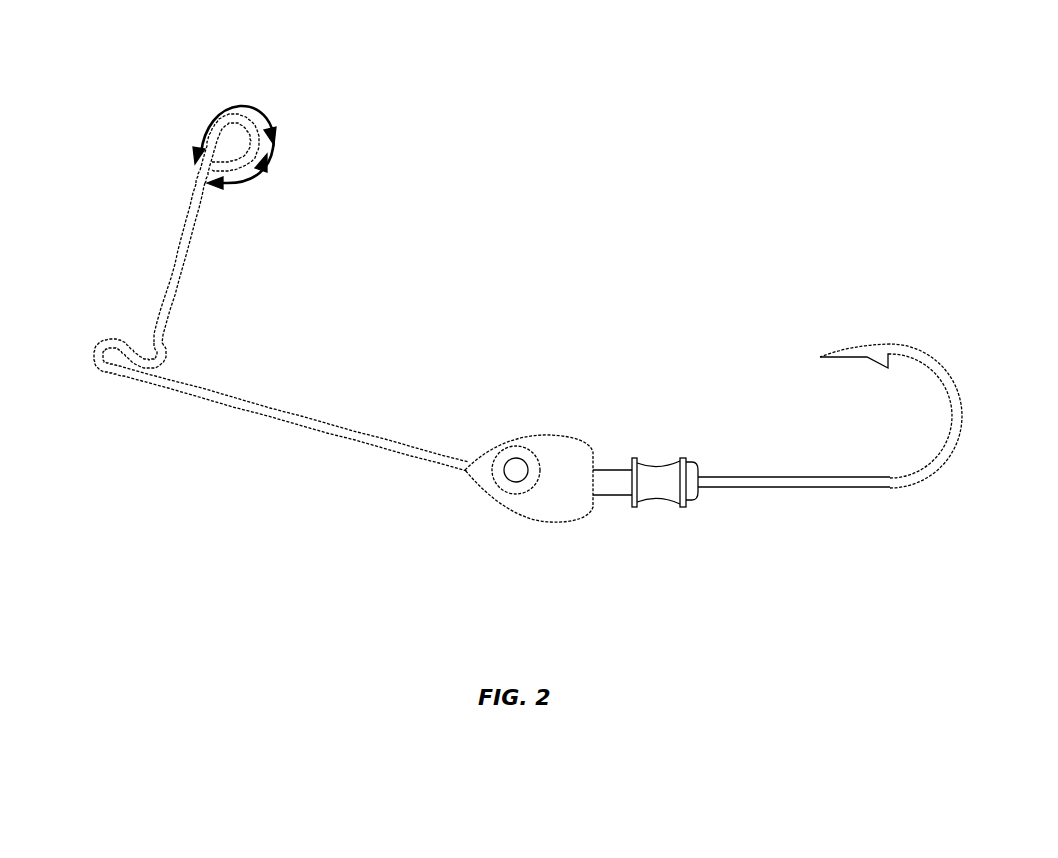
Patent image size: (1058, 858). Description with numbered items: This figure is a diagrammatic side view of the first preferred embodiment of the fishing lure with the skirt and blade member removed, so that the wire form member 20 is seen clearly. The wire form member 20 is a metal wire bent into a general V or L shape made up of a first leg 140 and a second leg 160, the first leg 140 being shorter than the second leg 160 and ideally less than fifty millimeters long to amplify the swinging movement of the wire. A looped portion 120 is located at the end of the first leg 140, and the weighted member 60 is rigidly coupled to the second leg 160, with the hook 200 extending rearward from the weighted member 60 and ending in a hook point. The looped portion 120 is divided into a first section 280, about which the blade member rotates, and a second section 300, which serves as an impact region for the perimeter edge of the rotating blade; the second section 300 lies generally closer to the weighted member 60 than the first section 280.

The wire form member 20 is at (177, 293).
The weighted member 60 is at (550, 453).
The looped portion 120 is at (277, 97).
The first leg 140 is at (87, 368).
The second leg 160 is at (462, 494).
The hook 200 is at (822, 357).
The first section 280 is at (233, 107).
The second section 300 is at (253, 178).